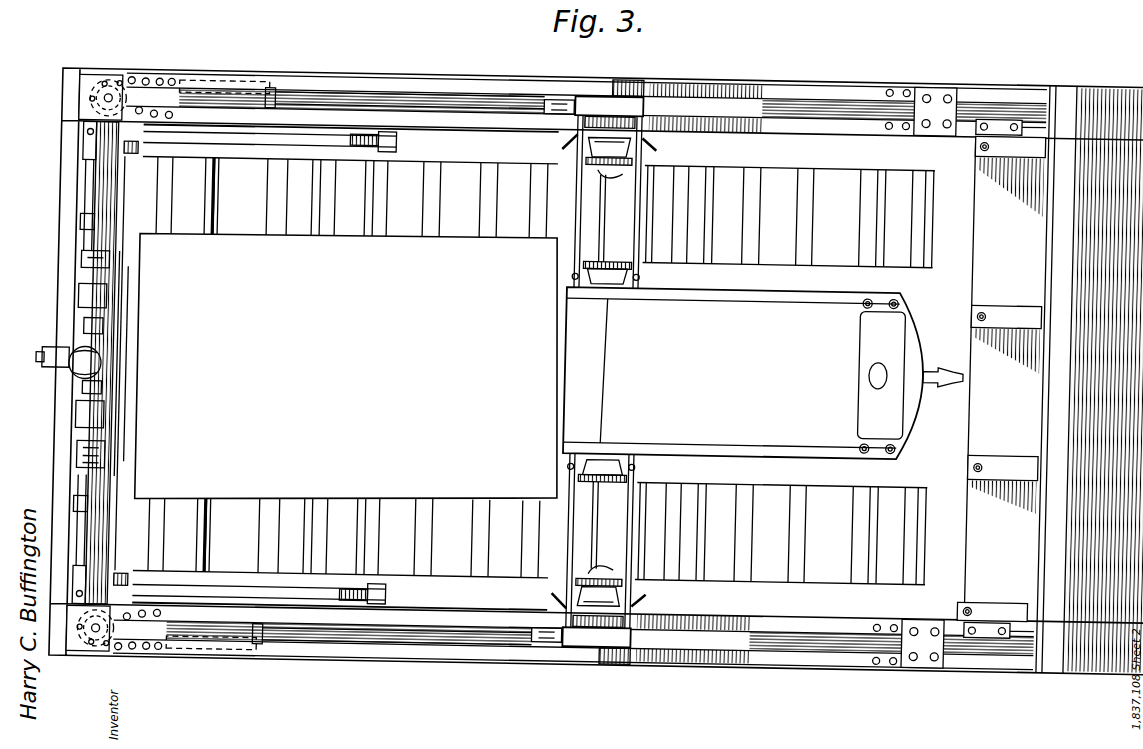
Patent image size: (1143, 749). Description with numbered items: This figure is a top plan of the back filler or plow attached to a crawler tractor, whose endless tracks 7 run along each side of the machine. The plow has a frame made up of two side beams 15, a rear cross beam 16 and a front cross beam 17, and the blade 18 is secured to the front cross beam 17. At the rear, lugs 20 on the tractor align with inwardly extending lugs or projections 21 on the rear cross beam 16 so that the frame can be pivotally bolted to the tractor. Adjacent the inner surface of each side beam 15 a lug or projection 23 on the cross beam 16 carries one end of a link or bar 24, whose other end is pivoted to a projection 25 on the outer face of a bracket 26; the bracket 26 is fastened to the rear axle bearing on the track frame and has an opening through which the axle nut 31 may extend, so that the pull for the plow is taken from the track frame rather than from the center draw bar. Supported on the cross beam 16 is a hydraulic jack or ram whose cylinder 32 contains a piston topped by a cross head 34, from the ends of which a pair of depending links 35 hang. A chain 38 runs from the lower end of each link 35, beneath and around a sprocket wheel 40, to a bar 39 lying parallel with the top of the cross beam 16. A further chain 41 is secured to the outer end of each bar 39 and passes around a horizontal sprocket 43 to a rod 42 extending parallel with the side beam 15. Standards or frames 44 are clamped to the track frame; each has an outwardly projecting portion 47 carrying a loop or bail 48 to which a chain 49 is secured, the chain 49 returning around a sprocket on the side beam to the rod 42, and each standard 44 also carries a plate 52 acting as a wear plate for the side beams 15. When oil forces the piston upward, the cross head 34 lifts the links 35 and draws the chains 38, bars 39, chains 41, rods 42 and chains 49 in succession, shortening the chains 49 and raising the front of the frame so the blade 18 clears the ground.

The endless tracks 7 is at (770, 165).
The side beams 15 is at (775, 85).
The rear cross beam 16 is at (72, 212).
The front cross beam 17 is at (978, 238).
The blade 18 is at (1077, 366).
The lugs 20 is at (124, 300).
The lugs or projections 21 is at (133, 276).
The lug or projection 23 is at (133, 153).
The link or bar 24 is at (248, 143).
The projection 25 is at (400, 132).
The bracket 26 is at (400, 152).
The nut 31 is at (330, 156).
The cylinder 32 is at (54, 352).
The cross head 34 is at (108, 358).
The depending links 35 is at (110, 325).
The chain 38 is at (86, 258).
The bar 39 is at (88, 178).
The sprocket wheel 40 is at (84, 295).
The chain 41 is at (240, 78).
The rod 42 is at (420, 88).
The horizontal sprocket 43 is at (118, 75).
The standards or frames 44 is at (620, 165).
The projecting portion 47 is at (656, 138).
The loop or bail 48 is at (640, 95).
The chain 49 is at (562, 91).
The plate 52 is at (585, 135).